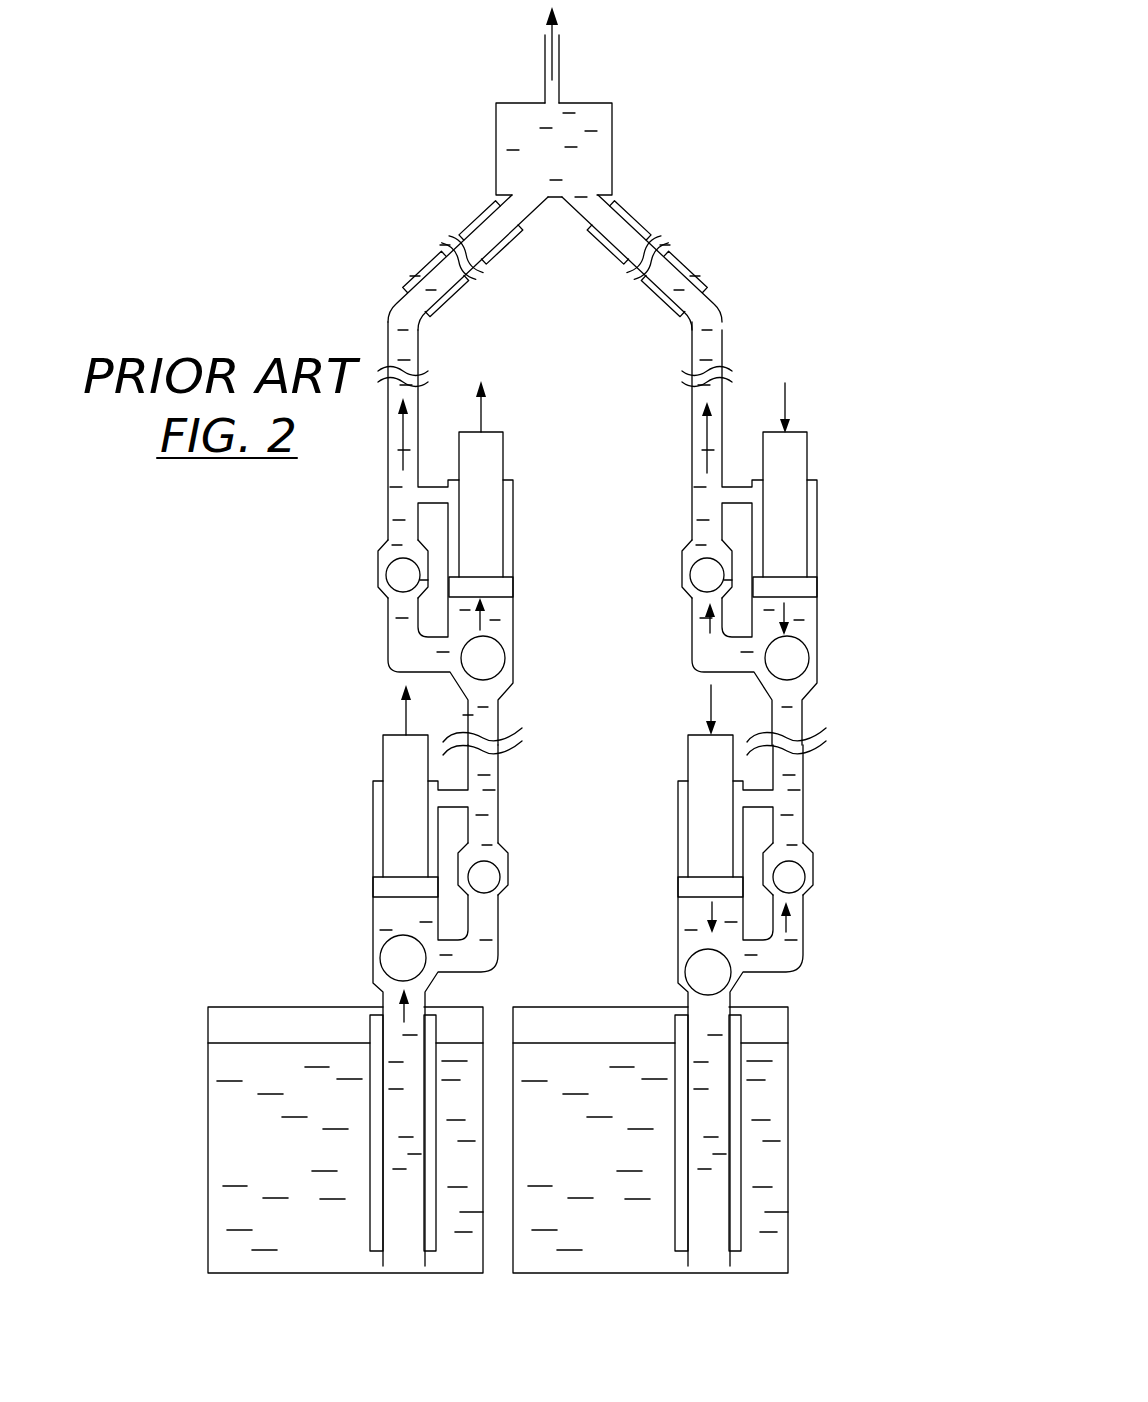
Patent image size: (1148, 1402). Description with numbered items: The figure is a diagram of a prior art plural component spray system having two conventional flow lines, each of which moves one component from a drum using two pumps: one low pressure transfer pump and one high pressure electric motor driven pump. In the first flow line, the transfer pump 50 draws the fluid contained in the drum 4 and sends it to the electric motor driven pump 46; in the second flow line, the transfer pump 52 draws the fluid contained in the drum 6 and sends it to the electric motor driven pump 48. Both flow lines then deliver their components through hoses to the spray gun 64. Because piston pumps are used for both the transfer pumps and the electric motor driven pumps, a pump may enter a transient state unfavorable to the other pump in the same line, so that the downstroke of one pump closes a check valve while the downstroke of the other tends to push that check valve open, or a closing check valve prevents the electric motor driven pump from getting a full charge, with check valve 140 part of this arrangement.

The spray gun 64 is at (496, 133).
The electric motor driven piston pump 48 is at (457, 533).
The electric motor driven piston pump 46 is at (769, 533).
The transfer pump 52 is at (437, 975).
The transfer pump 50 is at (735, 975).
The check valve 140 is at (508, 862).
The drum 6 is at (208, 1076).
The drum 4 is at (684, 1140).